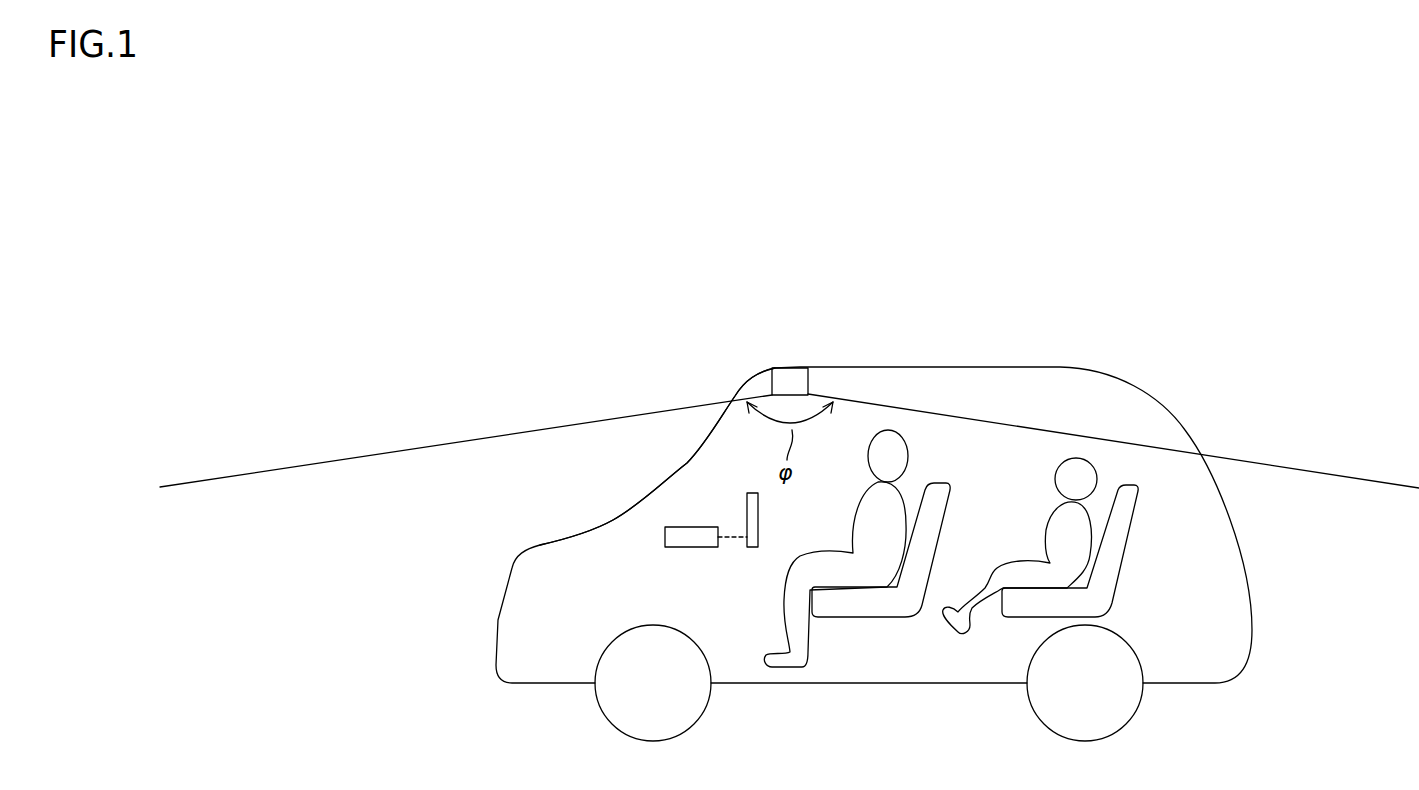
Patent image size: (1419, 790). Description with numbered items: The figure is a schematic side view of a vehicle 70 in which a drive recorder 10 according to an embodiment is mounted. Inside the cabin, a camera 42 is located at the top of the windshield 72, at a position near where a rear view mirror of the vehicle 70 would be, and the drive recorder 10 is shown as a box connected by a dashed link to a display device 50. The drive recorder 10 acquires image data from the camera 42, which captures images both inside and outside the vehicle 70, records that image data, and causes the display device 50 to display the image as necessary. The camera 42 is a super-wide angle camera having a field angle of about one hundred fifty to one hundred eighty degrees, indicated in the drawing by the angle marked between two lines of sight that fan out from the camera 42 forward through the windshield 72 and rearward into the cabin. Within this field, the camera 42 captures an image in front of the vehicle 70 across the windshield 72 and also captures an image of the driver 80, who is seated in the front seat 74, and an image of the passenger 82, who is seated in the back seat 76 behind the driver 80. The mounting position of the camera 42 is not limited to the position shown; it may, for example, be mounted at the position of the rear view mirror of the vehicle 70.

The drive recorder 10 is at (693, 527).
The camera 42 is at (790, 383).
The display device 50 is at (753, 548).
The vehicle 70 is at (1127, 365).
The windshield 72 is at (681, 436).
The front seat 74 is at (878, 617).
The back seat 76 is at (1027, 617).
The driver 80 is at (912, 455).
The passenger 82 is at (1098, 477).